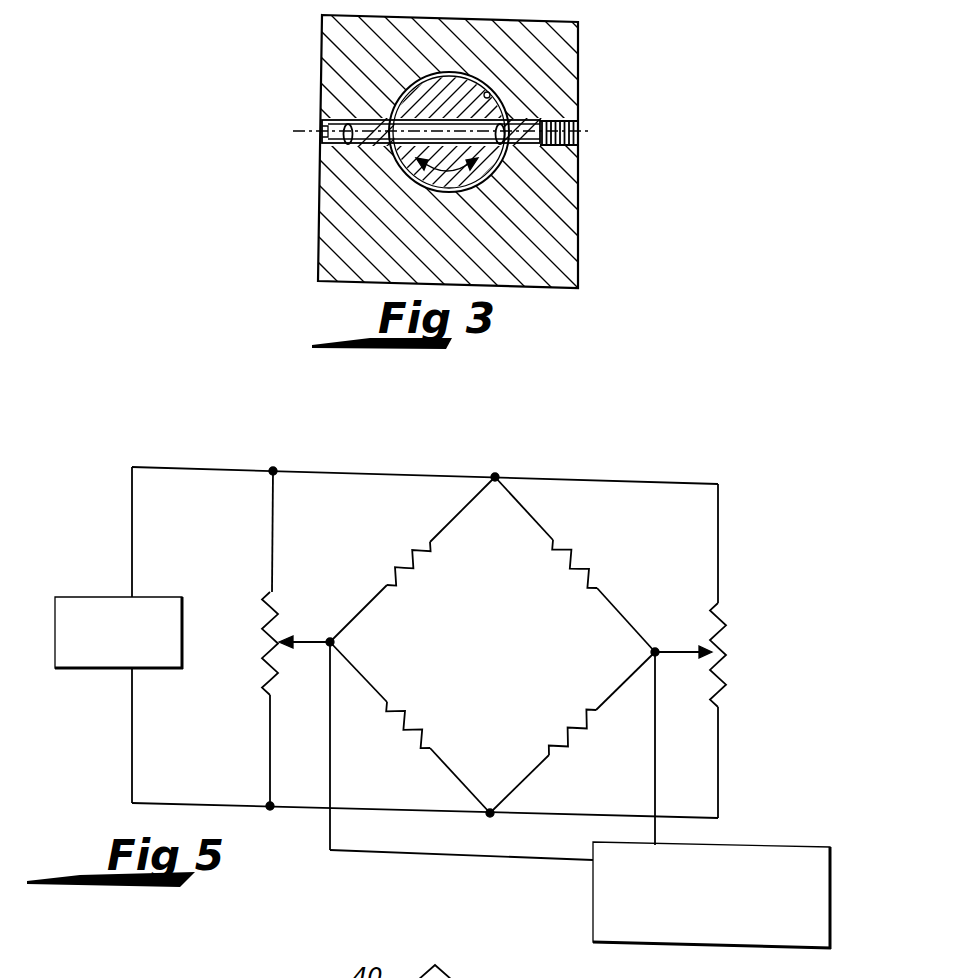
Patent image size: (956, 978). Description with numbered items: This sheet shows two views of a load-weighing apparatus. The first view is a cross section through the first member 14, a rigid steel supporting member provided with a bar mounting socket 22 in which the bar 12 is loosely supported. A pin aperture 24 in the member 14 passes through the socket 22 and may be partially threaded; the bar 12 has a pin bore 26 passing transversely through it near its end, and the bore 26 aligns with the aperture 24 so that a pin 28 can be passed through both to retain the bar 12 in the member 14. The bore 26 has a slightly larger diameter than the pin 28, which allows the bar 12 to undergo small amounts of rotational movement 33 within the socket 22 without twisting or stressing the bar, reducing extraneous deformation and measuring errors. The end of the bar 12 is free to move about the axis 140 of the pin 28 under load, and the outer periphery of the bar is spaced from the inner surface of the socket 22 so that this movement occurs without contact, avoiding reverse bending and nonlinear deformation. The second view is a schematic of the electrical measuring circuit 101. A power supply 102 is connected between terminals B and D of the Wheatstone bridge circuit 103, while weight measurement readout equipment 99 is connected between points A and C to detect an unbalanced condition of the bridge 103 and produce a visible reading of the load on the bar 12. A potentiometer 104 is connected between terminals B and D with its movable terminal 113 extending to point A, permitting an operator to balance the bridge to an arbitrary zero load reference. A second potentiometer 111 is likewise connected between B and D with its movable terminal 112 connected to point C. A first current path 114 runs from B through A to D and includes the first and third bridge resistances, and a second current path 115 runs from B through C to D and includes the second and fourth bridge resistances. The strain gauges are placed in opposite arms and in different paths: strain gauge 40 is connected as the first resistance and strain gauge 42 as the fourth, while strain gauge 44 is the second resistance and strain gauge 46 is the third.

In FIG. 3, the bar 12 is at (415, 80).
In FIG. 3, the first member 14 is at (578, 188).
In FIG. 3, the bar mounting socket 22 is at (490, 95).
In FIG. 3, the pin aperture 24 is at (346, 140).
In FIG. 3, the pin bore 26 is at (503, 140).
In FIG. 3, the pin 28 is at (321, 121).
In FIG. 3, the rotational movement 33 is at (447, 201).
In FIG. 3, the axis 140 is at (594, 132).
In FIG. 5, the circuit 101 is at (419, 585).
In FIG. 5, the power supply 102 is at (166, 597).
In FIG. 5, the bridge circuit 103 is at (516, 649).
In FIG. 5, the potentiometer 104 is at (226, 638).
In FIG. 5, the second potentiometer 111 is at (766, 646).
In FIG. 5, the movable terminal 112 is at (683, 650).
In FIG. 5, the movable terminal 113 is at (305, 641).
In FIG. 5, the first current path 114 is at (458, 515).
In FIG. 5, the second current path 115 is at (540, 522).
In FIG. 5, the strain gauge 40 is at (425, 540).
In FIG. 5, the strain gauge 44 is at (595, 578).
In FIG. 5, the strain gauge 46 is at (400, 742).
In FIG. 5, the strain gauge 42 is at (563, 742).
In FIG. 5, the weight measurement readout equipment 99 is at (757, 843).